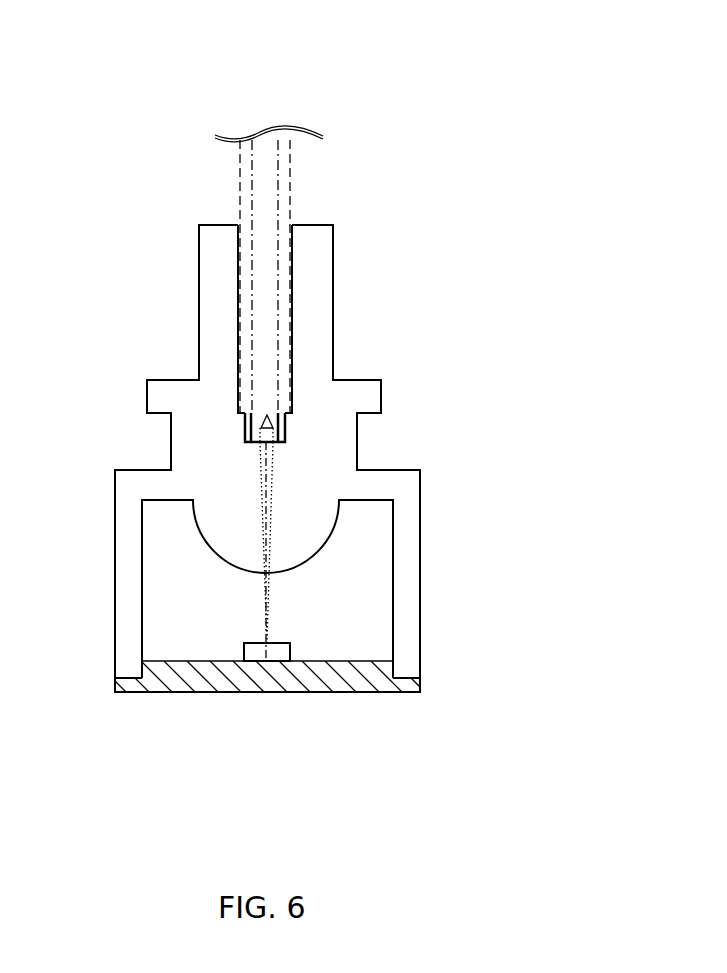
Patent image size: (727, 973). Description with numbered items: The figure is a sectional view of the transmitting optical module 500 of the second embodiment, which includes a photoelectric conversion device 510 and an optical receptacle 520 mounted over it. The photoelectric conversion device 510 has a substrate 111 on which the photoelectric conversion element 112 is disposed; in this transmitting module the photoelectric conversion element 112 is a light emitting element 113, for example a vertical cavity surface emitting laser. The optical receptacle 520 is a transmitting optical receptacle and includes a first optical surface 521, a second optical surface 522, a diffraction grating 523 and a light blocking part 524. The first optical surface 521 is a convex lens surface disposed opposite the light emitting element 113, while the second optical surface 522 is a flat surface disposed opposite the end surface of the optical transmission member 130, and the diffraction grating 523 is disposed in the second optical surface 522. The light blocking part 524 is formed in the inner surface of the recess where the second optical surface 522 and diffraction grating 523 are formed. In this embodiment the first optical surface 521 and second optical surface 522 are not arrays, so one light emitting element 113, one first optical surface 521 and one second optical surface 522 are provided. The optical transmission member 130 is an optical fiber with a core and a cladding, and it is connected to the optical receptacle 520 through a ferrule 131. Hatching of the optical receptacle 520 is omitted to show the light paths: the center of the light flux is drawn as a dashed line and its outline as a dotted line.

The optical module 500 is at (541, 97).
The photoelectric conversion device 510 is at (264, 735).
The substrate 111 is at (188, 678).
The photoelectric conversion element 112 is at (267, 655).
The light emitting element 113 is at (303, 715).
The optical receptacle 520 is at (381, 393).
The first optical surface 521 is at (210, 537).
The second optical surface 522 is at (175, 387).
The diffraction grating 523 is at (255, 413).
The light blocking part 524 is at (245, 440).
The optical transmission member 130 is at (268, 188).
The ferrule 131 is at (290, 157).